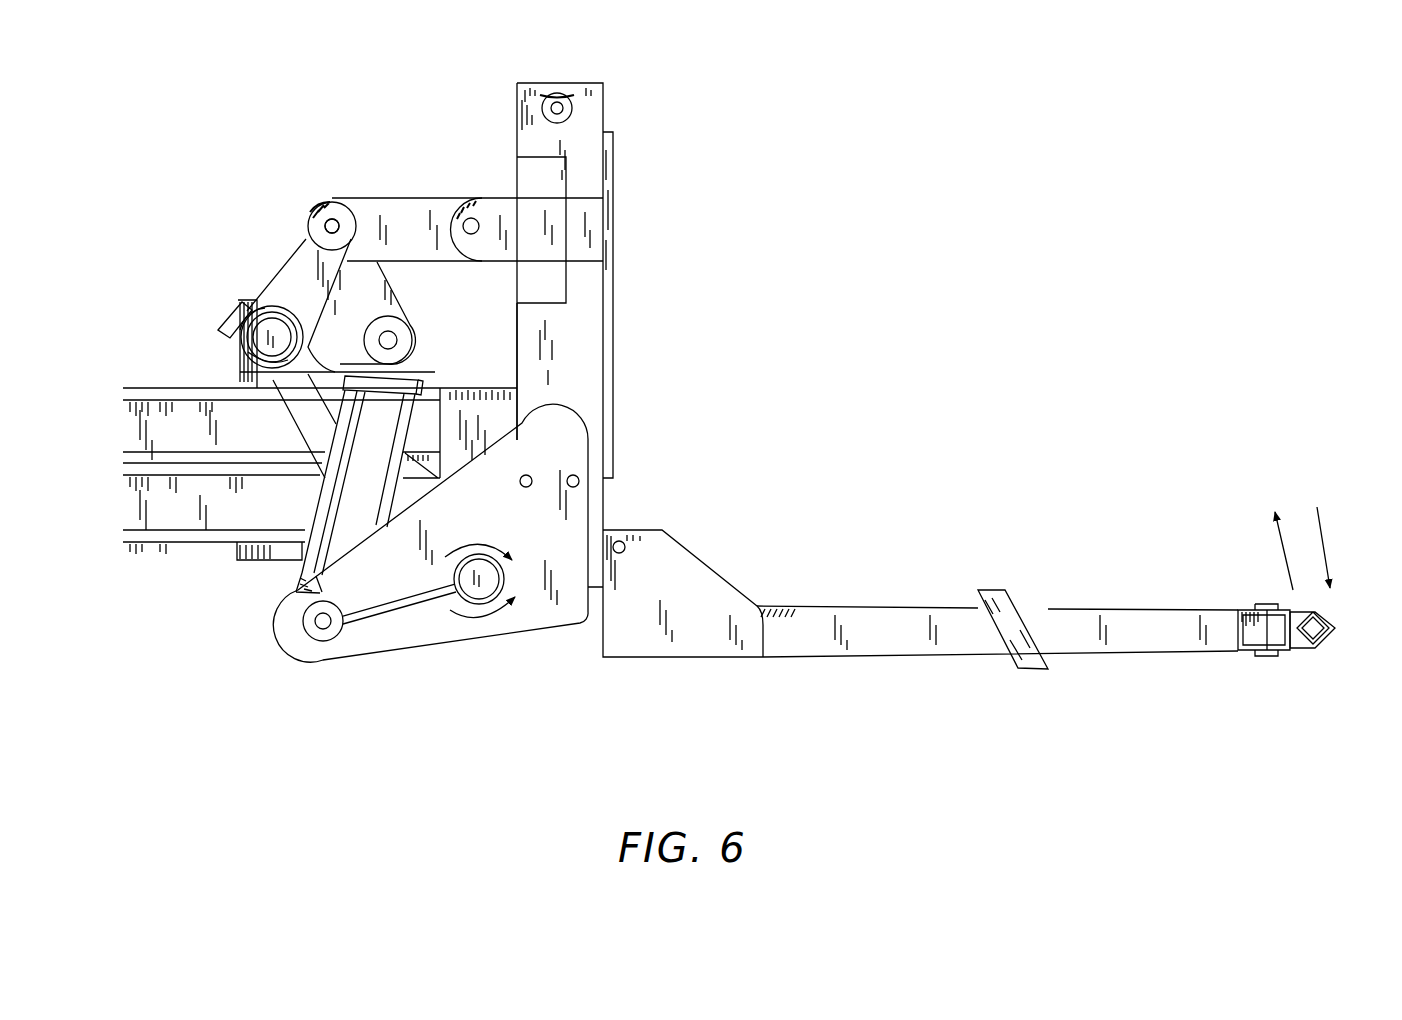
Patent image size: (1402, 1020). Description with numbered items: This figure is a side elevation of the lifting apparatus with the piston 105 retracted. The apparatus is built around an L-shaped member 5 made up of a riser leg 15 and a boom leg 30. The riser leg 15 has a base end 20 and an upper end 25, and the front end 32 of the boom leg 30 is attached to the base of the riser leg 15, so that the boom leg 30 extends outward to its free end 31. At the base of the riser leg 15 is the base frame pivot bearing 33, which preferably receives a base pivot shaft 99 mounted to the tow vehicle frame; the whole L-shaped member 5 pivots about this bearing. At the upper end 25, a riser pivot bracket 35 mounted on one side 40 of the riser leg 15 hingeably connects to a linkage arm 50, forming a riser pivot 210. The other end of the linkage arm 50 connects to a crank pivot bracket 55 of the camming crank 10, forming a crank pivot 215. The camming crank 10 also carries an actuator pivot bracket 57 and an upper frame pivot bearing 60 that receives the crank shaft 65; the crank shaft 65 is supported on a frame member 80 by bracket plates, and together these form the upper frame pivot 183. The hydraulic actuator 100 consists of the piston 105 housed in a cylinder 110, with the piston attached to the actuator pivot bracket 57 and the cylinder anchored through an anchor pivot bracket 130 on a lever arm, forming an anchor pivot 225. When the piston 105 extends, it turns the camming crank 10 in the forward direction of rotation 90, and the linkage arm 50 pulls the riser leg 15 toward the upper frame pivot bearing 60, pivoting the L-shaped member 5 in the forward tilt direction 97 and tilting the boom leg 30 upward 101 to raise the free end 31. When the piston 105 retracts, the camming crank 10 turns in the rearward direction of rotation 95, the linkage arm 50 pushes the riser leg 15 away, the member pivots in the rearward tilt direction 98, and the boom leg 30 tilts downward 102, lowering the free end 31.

The L-shaped member 5 is at (630, 333).
The camming crank 10 is at (295, 246).
The riser leg 15 is at (590, 285).
The base end 20 is at (608, 498).
The upper end 25 is at (575, 130).
The boom leg 30 is at (895, 612).
The free end 31 is at (1250, 614).
The front end 32 is at (760, 604).
The base frame pivot bearing 33 is at (452, 592).
The riser pivot bracket 35 is at (478, 218).
The side 40 is at (580, 382).
The linkage arm 50 is at (400, 210).
The crank pivot bracket 55 is at (331, 208).
The actuator pivot bracket 57 is at (400, 316).
The upper frame pivot bearing 60 is at (274, 318).
The crank shaft 65 is at (282, 325).
The frame member 80 is at (186, 430).
The forward direction of rotation 90 is at (230, 323).
The rearward direction of rotation 95 is at (297, 390).
The forward tilt direction 97 is at (478, 612).
The rearward tilt direction 98 is at (497, 542).
The base pivot shaft 99 is at (490, 578).
The hydraulic actuator 100 is at (300, 508).
The upward tilt 101 is at (1282, 540).
The downward tilt 102 is at (1325, 540).
The piston 105 is at (400, 374).
The cylinder 110 is at (322, 558).
The anchor pivot bracket 130 is at (303, 633).
The upper frame pivot 183 is at (228, 302).
The riser pivot 210 is at (466, 190).
The crank pivot 215 is at (298, 193).
The anchor pivot 225 is at (272, 636).